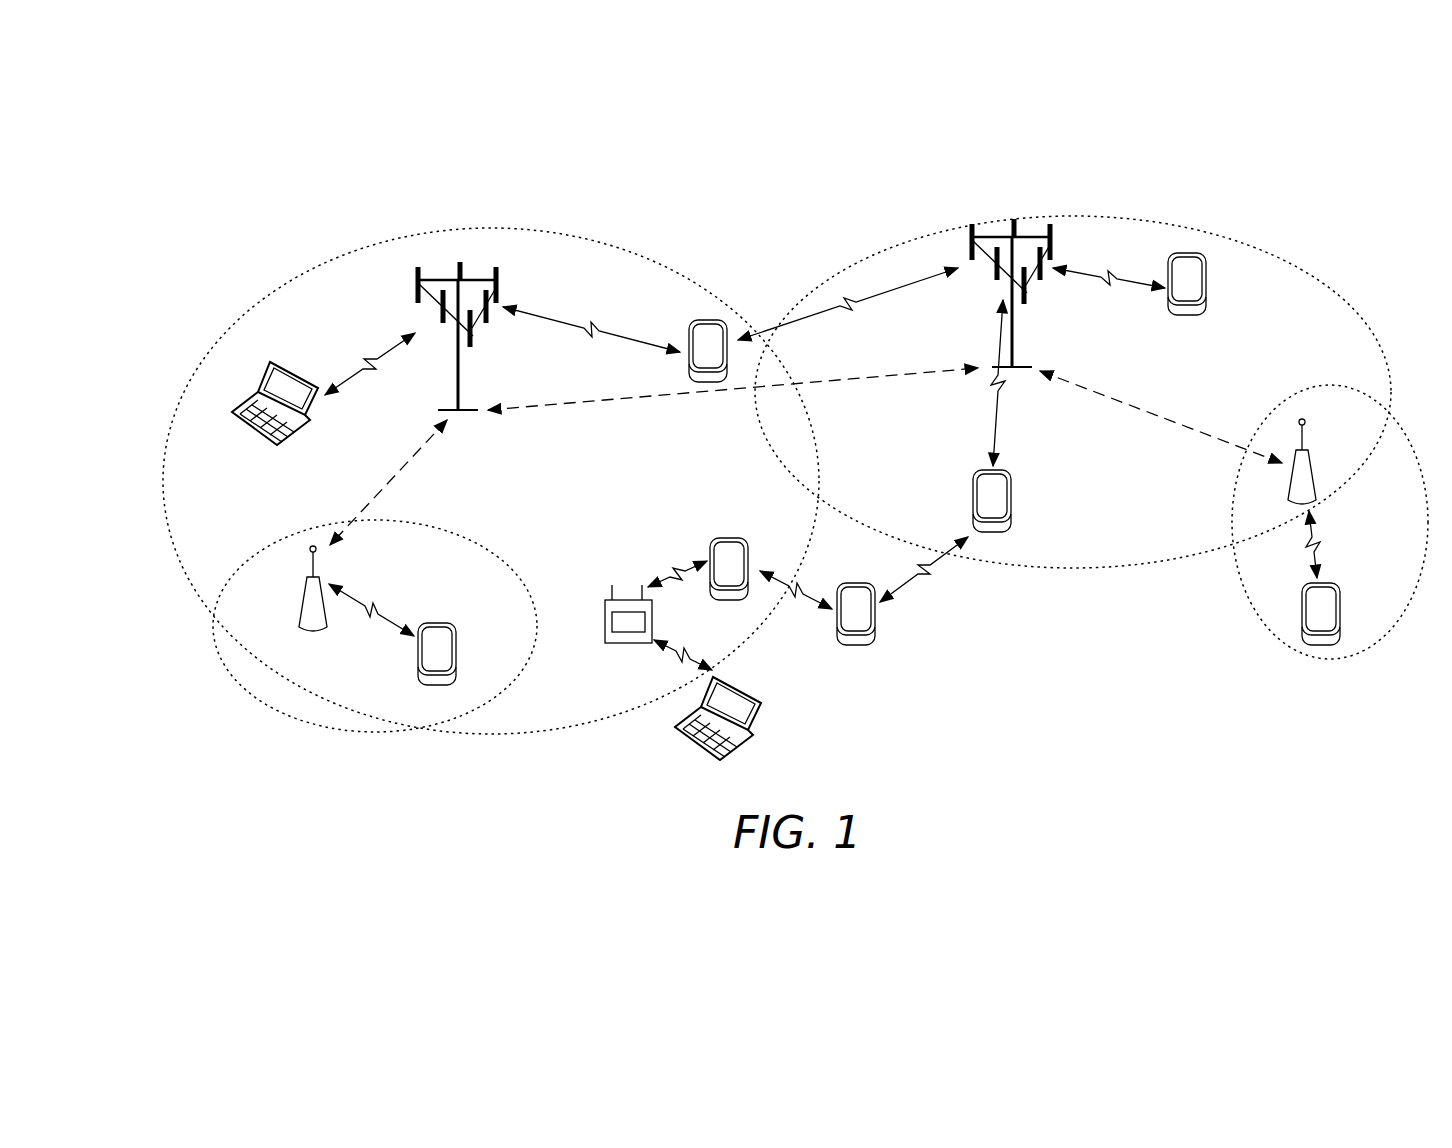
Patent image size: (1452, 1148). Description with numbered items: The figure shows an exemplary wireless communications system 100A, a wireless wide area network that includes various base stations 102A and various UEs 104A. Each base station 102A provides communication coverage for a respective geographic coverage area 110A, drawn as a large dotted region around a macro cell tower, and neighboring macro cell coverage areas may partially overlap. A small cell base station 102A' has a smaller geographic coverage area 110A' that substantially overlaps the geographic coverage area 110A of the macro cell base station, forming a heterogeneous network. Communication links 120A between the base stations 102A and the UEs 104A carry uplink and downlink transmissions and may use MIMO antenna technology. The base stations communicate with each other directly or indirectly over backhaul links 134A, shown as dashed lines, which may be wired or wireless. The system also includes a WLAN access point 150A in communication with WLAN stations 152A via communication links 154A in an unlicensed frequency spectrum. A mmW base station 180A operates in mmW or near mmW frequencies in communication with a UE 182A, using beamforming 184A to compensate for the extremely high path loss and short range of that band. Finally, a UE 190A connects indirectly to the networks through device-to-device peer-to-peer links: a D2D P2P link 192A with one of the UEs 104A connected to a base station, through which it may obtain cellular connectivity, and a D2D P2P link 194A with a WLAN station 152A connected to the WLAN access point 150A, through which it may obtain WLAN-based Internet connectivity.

The wireless communications system 100A is at (275, 258).
The geographic coverage area 110A is at (794, 450).
The geographic coverage area of small cell base station 110A' is at (413, 626).
The base station 102A is at (764, 349).
The small cell base station 102A' is at (354, 614).
The UE 104A is at (712, 320).
The communication link 120A is at (585, 332).
The backhaul link 134A is at (375, 500).
The WLAN access point 150A is at (632, 645).
The WLAN station 152A is at (730, 538).
The communication link 154A is at (655, 580).
The mmW base station 180A is at (1305, 448).
The UE 182A is at (1322, 645).
The beamforming 184A is at (1318, 555).
The UE 190A is at (855, 645).
The D2D P2P link 192A is at (912, 580).
The D2D P2P link 194A is at (815, 585).